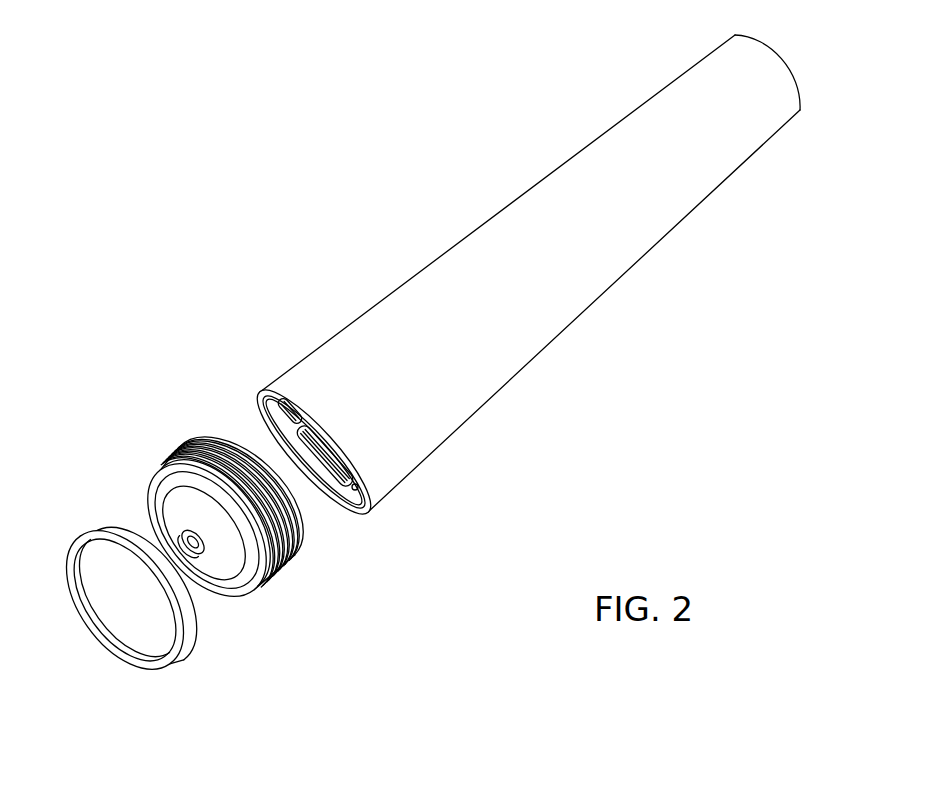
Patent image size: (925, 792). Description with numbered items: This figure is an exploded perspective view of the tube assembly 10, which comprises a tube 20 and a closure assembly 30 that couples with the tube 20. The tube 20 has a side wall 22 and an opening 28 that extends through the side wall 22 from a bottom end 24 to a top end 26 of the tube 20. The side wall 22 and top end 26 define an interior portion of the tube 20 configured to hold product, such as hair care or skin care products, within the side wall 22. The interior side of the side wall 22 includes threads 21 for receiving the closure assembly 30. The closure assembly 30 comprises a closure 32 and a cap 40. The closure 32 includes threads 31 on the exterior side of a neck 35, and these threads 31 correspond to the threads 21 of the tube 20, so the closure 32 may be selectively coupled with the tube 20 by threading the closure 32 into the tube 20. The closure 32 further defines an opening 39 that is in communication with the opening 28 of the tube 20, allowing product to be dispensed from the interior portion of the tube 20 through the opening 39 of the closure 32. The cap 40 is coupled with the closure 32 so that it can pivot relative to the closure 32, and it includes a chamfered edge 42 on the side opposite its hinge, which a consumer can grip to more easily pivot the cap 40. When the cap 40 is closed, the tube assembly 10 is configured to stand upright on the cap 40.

The tube assembly 10 is at (175, 197).
The tube 20 is at (541, 315).
The threads 21 is at (265, 392).
The side wall 22 is at (602, 272).
The bottom end 24 is at (368, 509).
The top end 26 is at (800, 110).
The opening 28 is at (340, 515).
The closure assembly 30 is at (181, 510).
The threads 31 is at (290, 557).
The closure 32 is at (157, 462).
The neck 35 is at (240, 458).
The opening 39 is at (190, 562).
The cap 40 is at (114, 592).
The chamfered edge 42 is at (128, 563).